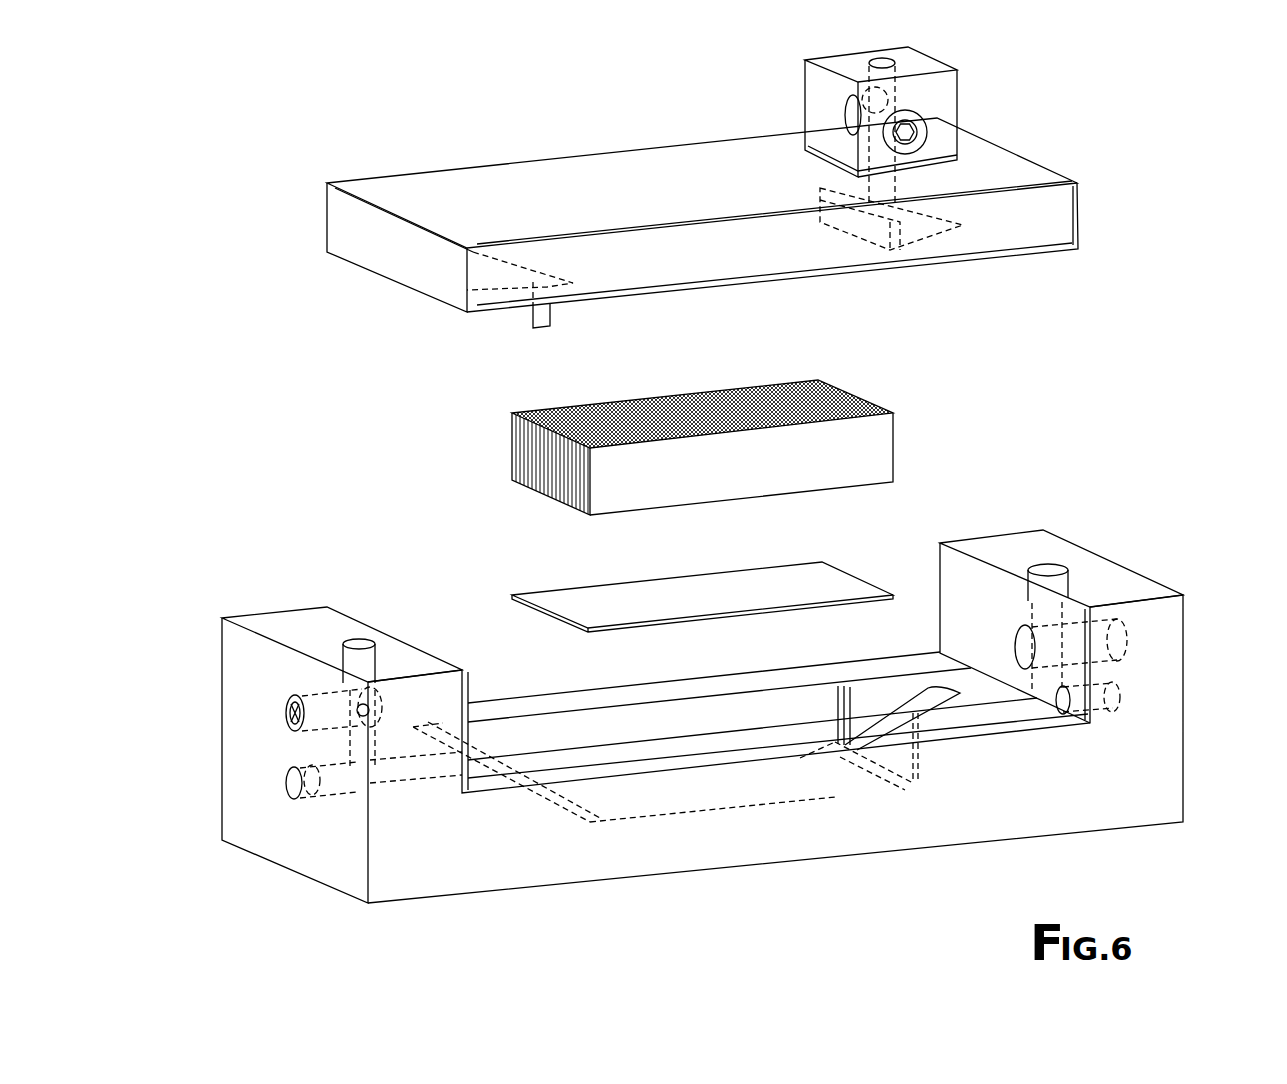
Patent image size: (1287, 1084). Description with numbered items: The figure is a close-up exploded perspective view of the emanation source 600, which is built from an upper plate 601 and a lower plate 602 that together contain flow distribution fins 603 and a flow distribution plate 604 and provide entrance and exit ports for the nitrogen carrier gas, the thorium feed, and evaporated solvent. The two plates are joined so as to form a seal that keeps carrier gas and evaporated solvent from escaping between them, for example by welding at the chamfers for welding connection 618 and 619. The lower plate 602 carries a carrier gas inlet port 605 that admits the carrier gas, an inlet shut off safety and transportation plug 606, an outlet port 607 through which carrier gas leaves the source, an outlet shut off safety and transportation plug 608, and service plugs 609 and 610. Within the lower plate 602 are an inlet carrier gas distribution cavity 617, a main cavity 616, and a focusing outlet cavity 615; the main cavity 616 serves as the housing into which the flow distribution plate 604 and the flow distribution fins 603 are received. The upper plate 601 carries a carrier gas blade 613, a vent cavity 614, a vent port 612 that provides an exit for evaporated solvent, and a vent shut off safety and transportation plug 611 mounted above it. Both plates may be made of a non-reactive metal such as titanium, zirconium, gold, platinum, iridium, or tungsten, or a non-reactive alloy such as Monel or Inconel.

The emanation source 600 is at (185, 160).
The upper plate 601 is at (605, 170).
The lower plate 602 is at (1035, 548).
The flow distribution fins 603 is at (510, 437).
The flow distribution plate 604 is at (547, 592).
The carrier gas inlet port 605 is at (358, 640).
The inlet shut off safety and transportation plug 606 is at (307, 702).
The outlet port 607 is at (1065, 565).
The outlet shut off safety and transportation plug 608 is at (1120, 641).
The service plug 609 is at (327, 792).
The service plug 610 is at (1108, 700).
The vent shut off safety and transportation plug 611 is at (933, 132).
The vent port 612 is at (898, 62).
The carrier gas blade 613 is at (520, 318).
The vent cavity 614 is at (873, 237).
The focusing outlet cavity 615 is at (867, 703).
The main cavity 616 is at (668, 722).
The inlet carrier gas distribution cavity 617 is at (510, 795).
The chamfer for welding connection 618 is at (1028, 258).
The chamfer for welding connection 619 is at (805, 757).